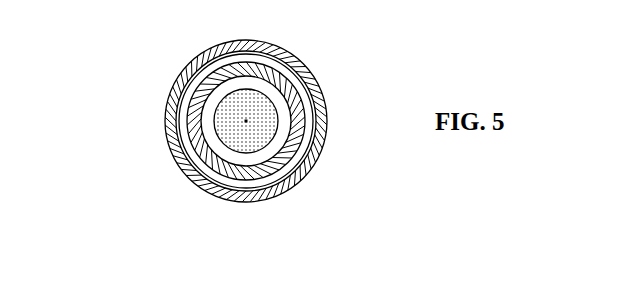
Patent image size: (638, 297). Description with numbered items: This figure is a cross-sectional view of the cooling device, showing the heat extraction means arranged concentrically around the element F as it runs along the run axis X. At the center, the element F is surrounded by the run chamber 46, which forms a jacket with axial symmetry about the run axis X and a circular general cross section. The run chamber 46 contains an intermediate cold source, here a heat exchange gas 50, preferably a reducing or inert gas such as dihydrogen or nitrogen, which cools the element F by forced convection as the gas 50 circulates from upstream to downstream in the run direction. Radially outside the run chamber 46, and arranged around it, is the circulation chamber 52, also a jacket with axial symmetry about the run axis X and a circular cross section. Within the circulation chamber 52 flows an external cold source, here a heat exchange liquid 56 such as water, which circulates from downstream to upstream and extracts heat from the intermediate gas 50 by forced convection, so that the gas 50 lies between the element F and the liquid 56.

The run chamber 46 is at (288, 186).
The heat exchange gas 50 is at (283, 163).
The circulation chamber 52 is at (182, 75).
The heat exchange liquid 56 is at (176, 122).
The element F is at (259, 139).
The run axis X is at (249, 121).